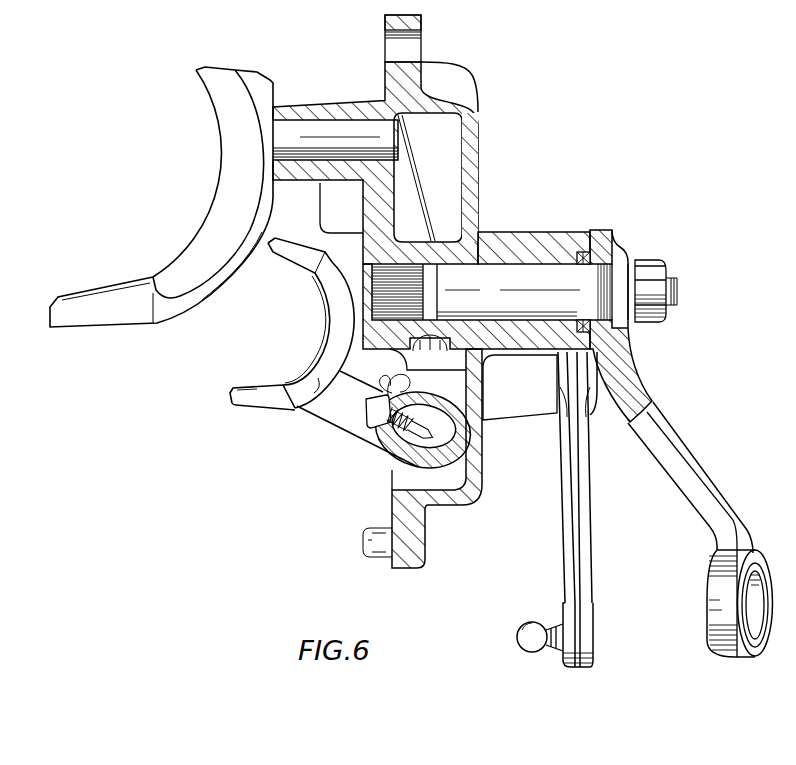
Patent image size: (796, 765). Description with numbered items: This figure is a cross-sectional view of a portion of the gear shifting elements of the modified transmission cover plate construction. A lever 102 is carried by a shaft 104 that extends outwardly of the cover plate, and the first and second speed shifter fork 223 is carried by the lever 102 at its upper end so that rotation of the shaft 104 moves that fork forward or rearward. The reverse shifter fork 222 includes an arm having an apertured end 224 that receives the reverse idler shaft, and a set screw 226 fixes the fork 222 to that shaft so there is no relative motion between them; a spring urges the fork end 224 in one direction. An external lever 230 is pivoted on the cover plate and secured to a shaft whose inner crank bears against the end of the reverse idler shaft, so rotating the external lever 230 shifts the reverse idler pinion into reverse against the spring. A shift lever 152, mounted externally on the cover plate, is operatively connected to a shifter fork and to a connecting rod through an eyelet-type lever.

The lever 102 is at (388, 213).
The shaft 104 is at (538, 277).
The shift lever 152 is at (700, 467).
The reverse shifter fork 222 is at (297, 406).
The first and second speed shifter fork 223 is at (225, 100).
The apertured end 224 is at (475, 432).
The set screw 226 is at (392, 427).
The external lever 230 is at (583, 460).